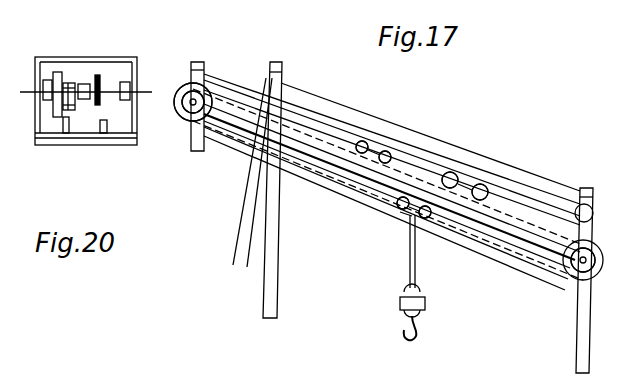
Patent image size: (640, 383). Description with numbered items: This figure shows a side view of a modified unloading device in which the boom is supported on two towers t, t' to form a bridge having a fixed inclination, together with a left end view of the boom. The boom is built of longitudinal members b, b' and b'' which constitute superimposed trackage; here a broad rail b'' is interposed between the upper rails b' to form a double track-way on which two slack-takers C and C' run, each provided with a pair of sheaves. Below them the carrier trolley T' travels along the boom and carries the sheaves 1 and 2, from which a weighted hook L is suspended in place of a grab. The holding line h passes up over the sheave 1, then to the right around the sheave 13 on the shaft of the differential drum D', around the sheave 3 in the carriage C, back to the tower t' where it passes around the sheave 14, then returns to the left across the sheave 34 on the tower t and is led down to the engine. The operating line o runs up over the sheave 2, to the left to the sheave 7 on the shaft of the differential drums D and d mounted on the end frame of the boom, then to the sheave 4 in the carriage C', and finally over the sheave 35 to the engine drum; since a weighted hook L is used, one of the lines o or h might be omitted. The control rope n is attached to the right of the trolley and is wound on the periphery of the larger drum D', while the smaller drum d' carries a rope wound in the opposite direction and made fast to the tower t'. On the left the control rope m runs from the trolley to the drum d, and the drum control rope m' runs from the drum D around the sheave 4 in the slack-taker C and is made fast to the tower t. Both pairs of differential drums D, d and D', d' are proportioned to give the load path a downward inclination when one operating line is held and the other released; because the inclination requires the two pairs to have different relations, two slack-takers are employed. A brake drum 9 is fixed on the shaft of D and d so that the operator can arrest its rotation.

In FIG. 17, the differential drum D is at (191, 106).
In FIG. 20, the differential drum D is at (58, 76).
In FIG. 17, the differential drum d is at (181, 88).
In FIG. 20, the differential drum d is at (69, 73).
In FIG. 17, the sheave 7 is at (185, 102).
In FIG. 20, the sheave 7 is at (101, 85).
In FIG. 17, the brake drum 9 is at (182, 112).
In FIG. 20, the brake drum 9 is at (74, 86).
In FIG. 17, the supporting tower t is at (277, 190).
In FIG. 17, the supporting tower t' is at (574, 280).
In FIG. 17, the drum control rope m' is at (392, 170).
In FIG. 17, the sheave 34 is at (272, 80).
In FIG. 17, the sheave 35 is at (272, 94).
In FIG. 17, the holding line h is at (388, 188).
In FIG. 17, the carrier trolley control rope m is at (389, 191).
In FIG. 17, the longitudinal member b' is at (386, 208).
In FIG. 20, the longitudinal member b' is at (86, 90).
In FIG. 17, the control rope n is at (503, 278).
In FIG. 17, the operating line o is at (322, 275).
In FIG. 17, the slack-taker C' is at (373, 140).
In FIG. 17, the slack-taker C is at (465, 178).
In FIG. 17, the sheave 4 is at (407, 155).
In FIG. 17, the sheave 3 is at (435, 165).
In FIG. 17, the carrier trolley T' is at (407, 223).
In FIG. 17, the sheave 2 is at (398, 208).
In FIG. 17, the sheave 1 is at (424, 219).
In FIG. 17, the weighted hook L is at (420, 312).
In FIG. 17, the sheave 14 is at (593, 214).
In FIG. 17, the differential drum D' is at (588, 270).
In FIG. 17, the differential drum d' is at (600, 246).
In FIG. 17, the sheave 13 is at (596, 260).
In FIG. 20, the broad rail b'' is at (87, 82).
In FIG. 20, the longitudinal member b is at (91, 126).